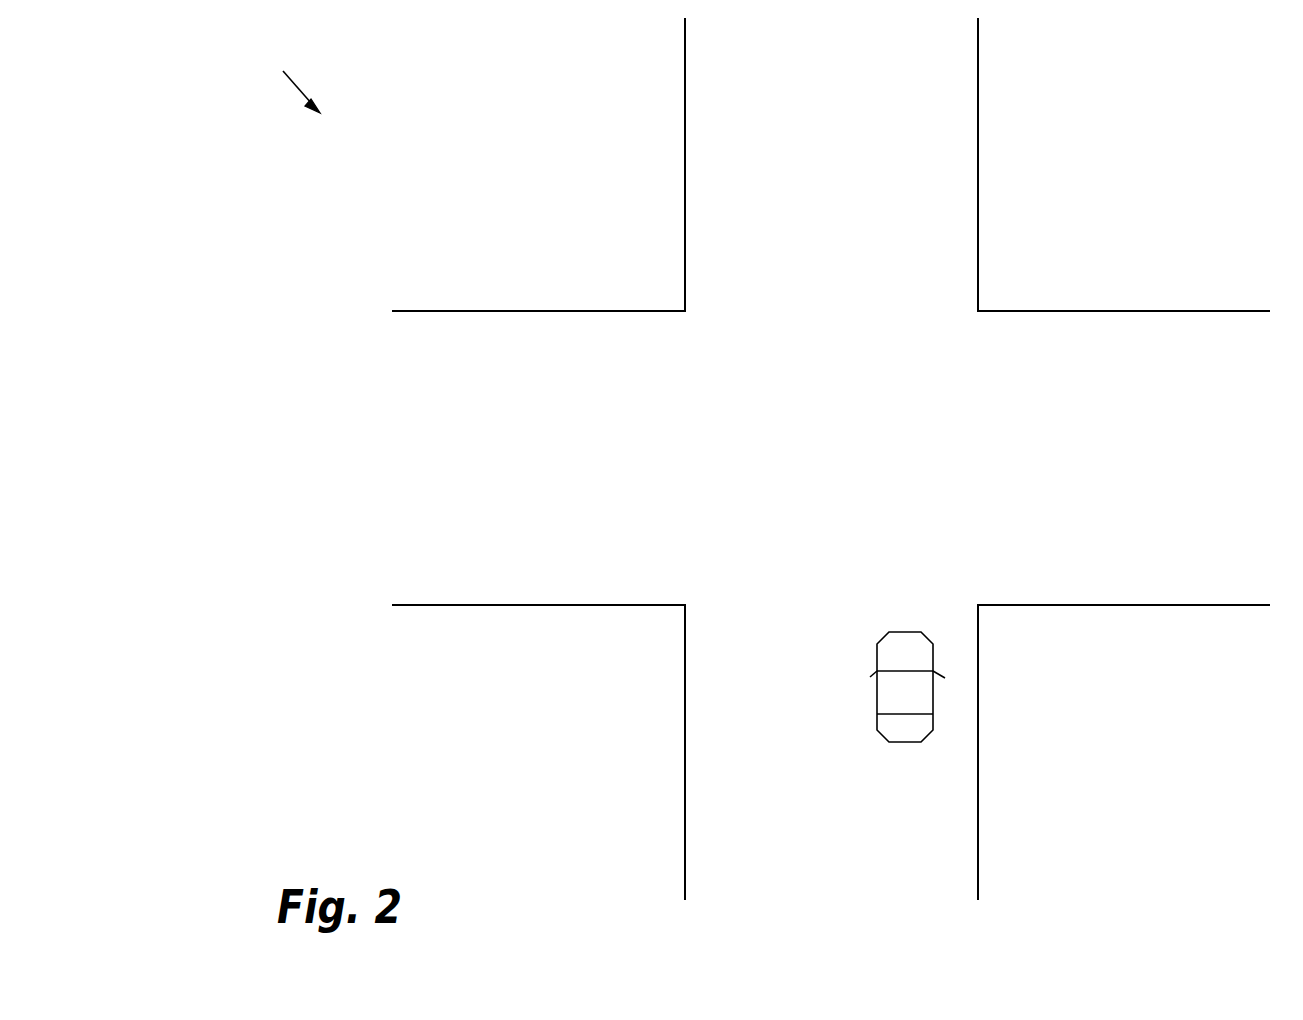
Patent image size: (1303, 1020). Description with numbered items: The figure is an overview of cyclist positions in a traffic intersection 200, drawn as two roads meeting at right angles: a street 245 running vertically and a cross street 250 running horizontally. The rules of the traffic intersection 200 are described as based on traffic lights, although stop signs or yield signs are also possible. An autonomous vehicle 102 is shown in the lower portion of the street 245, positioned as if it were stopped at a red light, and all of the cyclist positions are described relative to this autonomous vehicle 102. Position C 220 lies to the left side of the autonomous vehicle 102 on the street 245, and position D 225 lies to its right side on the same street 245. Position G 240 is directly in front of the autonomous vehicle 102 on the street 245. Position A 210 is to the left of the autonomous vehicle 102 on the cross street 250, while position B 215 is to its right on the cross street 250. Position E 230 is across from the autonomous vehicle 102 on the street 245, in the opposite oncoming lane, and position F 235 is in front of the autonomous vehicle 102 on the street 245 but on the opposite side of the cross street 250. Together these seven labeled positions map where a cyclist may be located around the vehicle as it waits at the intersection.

The traffic intersection 200 is at (291, 78).
The autonomous vehicle 102 is at (938, 643).
The position A 210 is at (538, 440).
The position B 215 is at (1125, 440).
The position C 220 is at (850, 690).
The position D 225 is at (962, 745).
The position E 230 is at (740, 293).
The position F 235 is at (942, 293).
The position G 240 is at (907, 590).
The street 245 is at (942, 110).
The cross street 250 is at (548, 330).